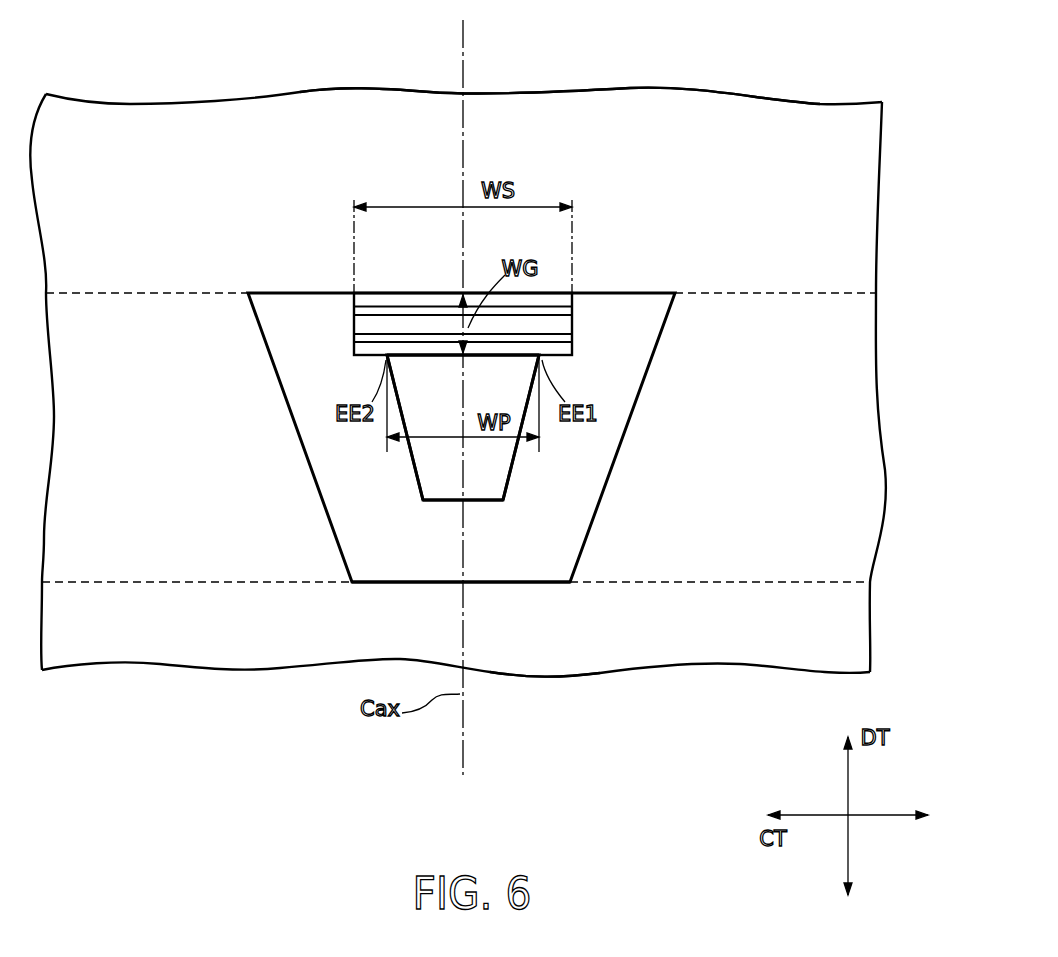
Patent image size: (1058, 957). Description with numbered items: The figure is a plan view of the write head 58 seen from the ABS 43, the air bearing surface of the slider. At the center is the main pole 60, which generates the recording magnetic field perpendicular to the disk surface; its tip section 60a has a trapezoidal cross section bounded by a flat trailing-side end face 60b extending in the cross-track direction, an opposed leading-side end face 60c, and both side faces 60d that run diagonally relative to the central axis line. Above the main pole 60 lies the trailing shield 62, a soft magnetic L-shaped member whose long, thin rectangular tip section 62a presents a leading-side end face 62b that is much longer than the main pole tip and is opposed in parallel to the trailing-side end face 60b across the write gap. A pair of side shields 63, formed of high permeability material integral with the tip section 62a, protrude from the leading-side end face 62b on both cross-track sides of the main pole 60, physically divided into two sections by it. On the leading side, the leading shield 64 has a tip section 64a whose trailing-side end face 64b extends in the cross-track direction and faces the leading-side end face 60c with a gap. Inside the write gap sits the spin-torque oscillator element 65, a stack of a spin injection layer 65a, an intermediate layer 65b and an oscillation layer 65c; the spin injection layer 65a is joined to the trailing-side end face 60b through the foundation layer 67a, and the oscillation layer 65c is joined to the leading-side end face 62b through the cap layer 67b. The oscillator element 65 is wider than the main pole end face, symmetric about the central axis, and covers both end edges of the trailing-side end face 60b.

The ABS 43 is at (106, 136).
The write head 58 is at (212, 95).
The trailing shield 62 is at (388, 126).
The tip section of trailing shield 62a is at (697, 113).
The leading-side end face 62b is at (626, 298).
The side shields 63 is at (218, 558).
The leading shield 64 is at (631, 664).
The tip section of leading shield 64a is at (568, 660).
The trailing-side end face of leading shield 64b is at (512, 570).
The spin-torque oscillator element 65 is at (574, 376).
The spin injection layer 65a is at (572, 338).
The intermediate layer 65b is at (572, 325).
The oscillation layer 65c is at (572, 311).
The foundation layer 67a is at (572, 348).
The cap layer 67b is at (572, 300).
The main pole 60 is at (434, 508).
The tip section of main pole 60a is at (497, 468).
The trailing-side end face 60b is at (408, 357).
The leading-side end face 60c is at (480, 502).
The side faces 60d is at (416, 470).